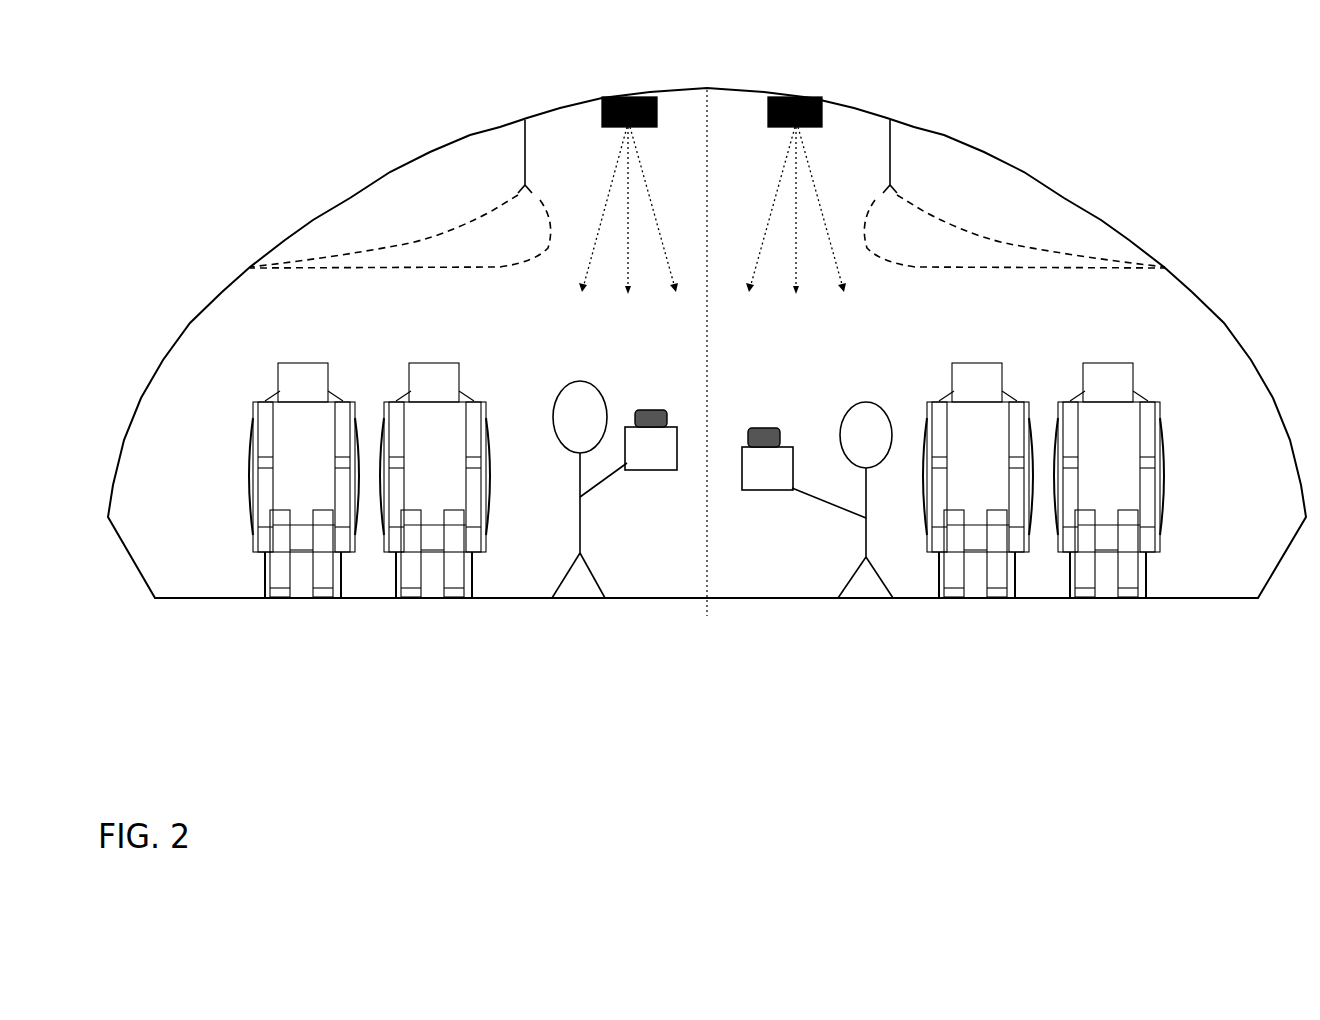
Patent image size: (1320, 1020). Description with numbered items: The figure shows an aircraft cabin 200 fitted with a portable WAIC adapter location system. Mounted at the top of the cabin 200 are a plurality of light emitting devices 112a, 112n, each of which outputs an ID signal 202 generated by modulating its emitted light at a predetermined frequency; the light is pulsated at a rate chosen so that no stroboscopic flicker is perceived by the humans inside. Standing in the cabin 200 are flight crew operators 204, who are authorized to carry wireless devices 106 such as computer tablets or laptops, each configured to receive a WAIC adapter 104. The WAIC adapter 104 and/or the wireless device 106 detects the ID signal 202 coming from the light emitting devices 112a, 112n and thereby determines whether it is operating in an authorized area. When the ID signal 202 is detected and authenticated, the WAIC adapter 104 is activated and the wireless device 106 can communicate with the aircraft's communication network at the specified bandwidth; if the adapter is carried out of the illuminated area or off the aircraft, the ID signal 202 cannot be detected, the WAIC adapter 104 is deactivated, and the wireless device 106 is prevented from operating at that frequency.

The aircraft cabin 200 is at (210, 298).
The light emitting device 112a is at (618, 96).
The light emitting device 112n is at (800, 96).
The ID signal 202 is at (590, 253).
The flight crew operator 204 is at (547, 380).
The WAIC adapter 104 is at (652, 409).
The wireless device 106 is at (657, 477).